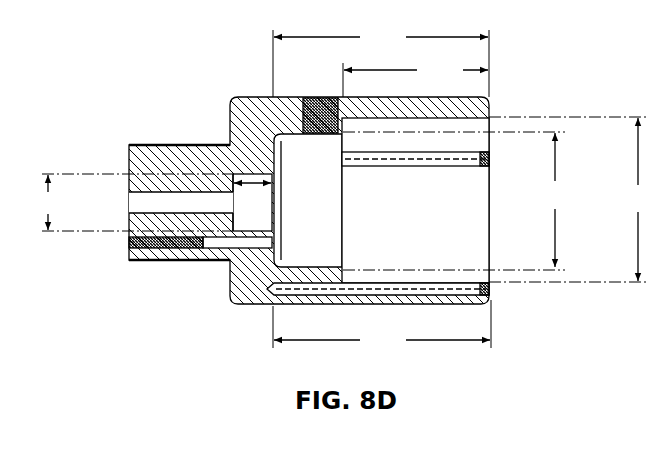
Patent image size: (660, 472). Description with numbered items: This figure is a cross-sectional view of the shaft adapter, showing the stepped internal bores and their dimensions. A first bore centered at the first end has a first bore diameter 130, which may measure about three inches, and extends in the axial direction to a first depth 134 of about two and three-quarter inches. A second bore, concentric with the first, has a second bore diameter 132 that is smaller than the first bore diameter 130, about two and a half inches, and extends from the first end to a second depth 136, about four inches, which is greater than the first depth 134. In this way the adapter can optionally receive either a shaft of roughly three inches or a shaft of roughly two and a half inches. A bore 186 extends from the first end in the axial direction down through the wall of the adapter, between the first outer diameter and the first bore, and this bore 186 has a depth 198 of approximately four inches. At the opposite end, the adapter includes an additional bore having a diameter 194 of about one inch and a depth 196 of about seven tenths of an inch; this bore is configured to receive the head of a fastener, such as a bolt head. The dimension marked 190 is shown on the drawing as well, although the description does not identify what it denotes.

The first bore diameter 130 is at (640, 199).
The second bore diameter 132 is at (557, 200).
The first depth 134 is at (415, 77).
The second depth 136 is at (381, 61).
The bore 186 is at (470, 295).
The inlet bore 190 is at (119, 213).
The diameter 194 is at (48, 202).
The depth 196 is at (254, 184).
The depth 198 is at (382, 326).